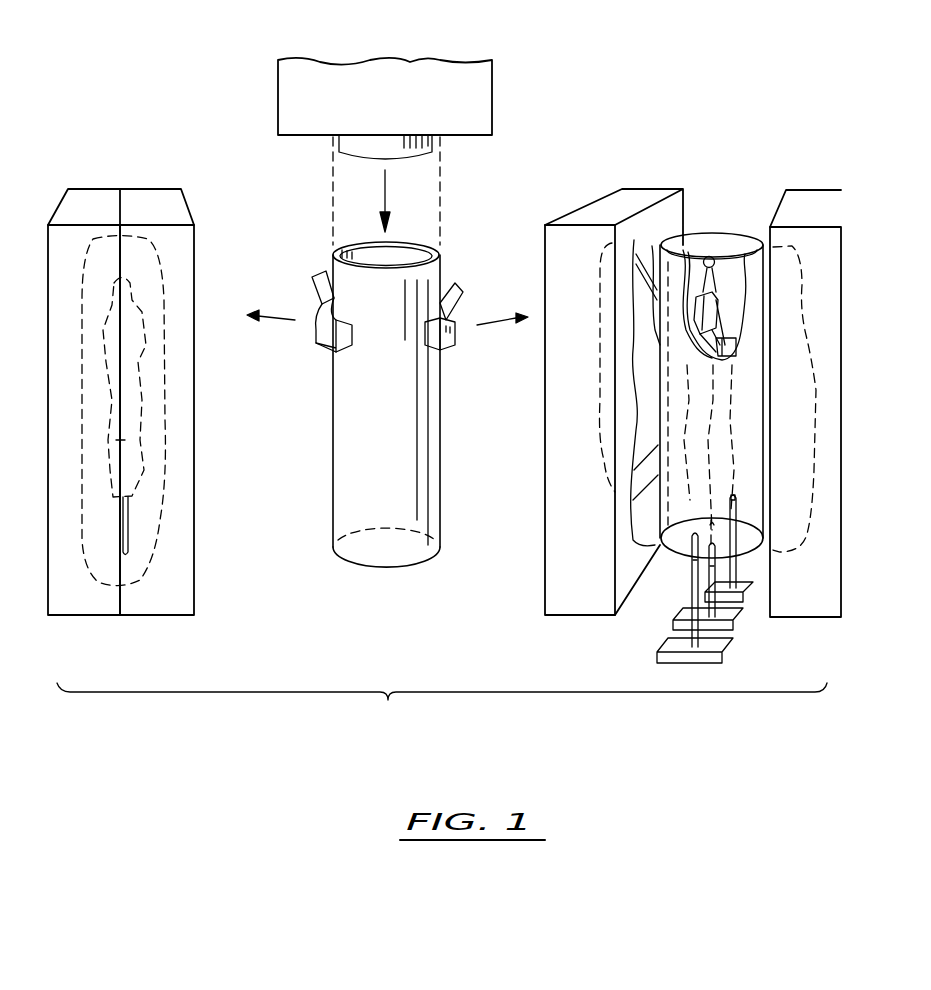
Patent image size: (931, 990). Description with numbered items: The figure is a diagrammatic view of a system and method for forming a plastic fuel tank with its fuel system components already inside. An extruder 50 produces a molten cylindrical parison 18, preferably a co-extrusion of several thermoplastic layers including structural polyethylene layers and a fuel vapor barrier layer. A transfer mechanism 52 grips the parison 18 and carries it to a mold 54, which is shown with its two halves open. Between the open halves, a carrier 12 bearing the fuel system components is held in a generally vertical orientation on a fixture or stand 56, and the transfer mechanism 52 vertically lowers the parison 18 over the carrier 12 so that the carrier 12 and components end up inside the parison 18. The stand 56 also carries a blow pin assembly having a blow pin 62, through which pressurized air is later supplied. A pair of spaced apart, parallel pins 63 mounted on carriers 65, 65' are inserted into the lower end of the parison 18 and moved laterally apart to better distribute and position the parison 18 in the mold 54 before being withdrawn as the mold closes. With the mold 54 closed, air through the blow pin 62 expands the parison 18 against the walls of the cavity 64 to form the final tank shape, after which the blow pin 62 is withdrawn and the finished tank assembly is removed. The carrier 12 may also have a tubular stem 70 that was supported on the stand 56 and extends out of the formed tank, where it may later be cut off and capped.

The carrier 12 is at (140, 403).
The parison 18 is at (433, 428).
The extruder 50 is at (430, 73).
The transfer mechanism 52 is at (447, 300).
The mold 54 is at (464, 384).
The stand 56 is at (740, 618).
The blow pin 62 is at (713, 572).
The pins 63 is at (718, 518).
The cavity 64 is at (165, 350).
The carrier 65 is at (765, 584).
The carrier 65' is at (695, 664).
The tubular stem 70 is at (737, 497).